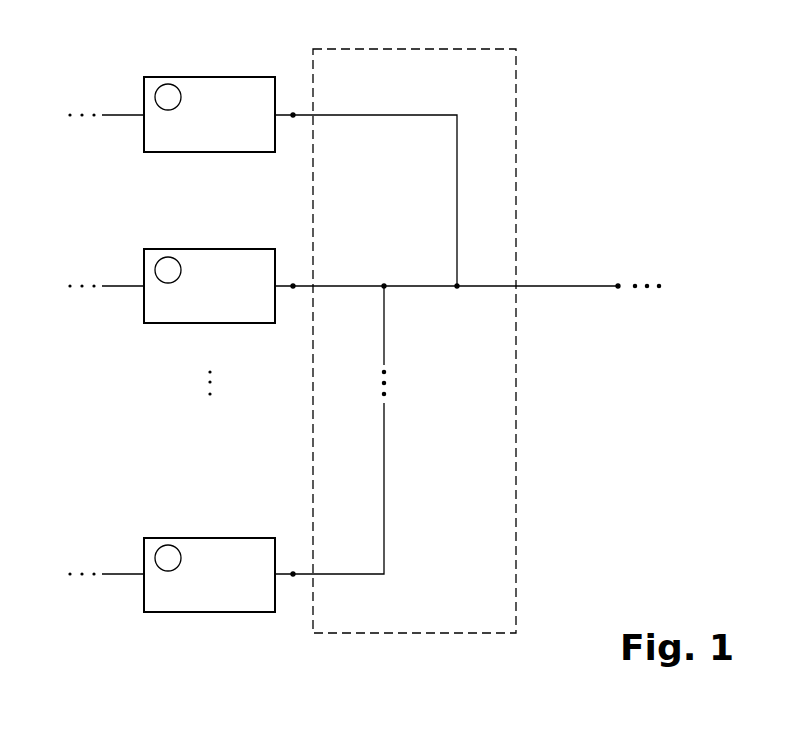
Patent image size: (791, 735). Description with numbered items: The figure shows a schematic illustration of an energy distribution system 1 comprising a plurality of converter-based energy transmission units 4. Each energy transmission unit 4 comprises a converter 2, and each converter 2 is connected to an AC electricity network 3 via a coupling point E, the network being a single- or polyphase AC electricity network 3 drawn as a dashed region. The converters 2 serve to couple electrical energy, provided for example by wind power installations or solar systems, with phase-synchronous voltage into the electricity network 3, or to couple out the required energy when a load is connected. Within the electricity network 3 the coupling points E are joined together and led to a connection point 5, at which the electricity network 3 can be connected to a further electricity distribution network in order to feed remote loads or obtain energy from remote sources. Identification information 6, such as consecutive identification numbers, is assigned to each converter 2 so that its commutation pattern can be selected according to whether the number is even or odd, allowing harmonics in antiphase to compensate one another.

The energy distribution system 1 is at (600, 50).
The converter 2 is at (208, 76).
The AC electricity network 3 is at (407, 48).
The energy transmission unit 4 is at (246, 52).
The connection point 5 is at (618, 283).
The identification information 6 is at (155, 97).
The coupling point E is at (293, 112).